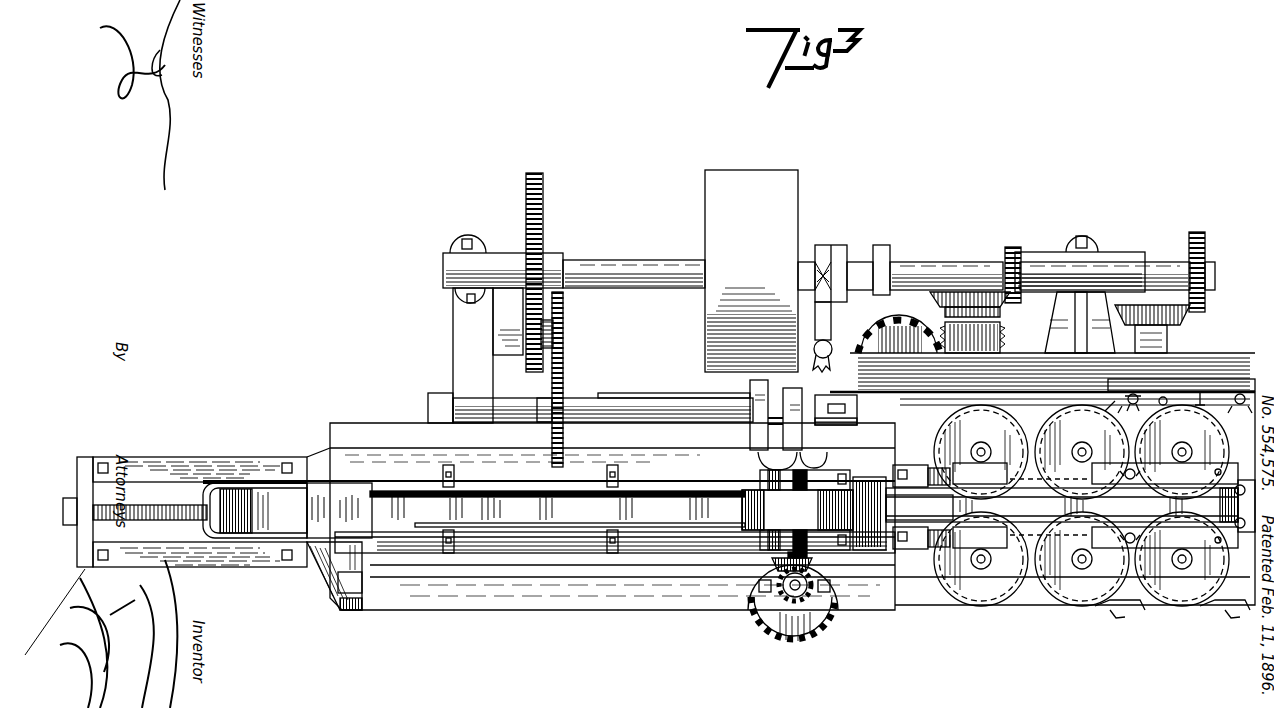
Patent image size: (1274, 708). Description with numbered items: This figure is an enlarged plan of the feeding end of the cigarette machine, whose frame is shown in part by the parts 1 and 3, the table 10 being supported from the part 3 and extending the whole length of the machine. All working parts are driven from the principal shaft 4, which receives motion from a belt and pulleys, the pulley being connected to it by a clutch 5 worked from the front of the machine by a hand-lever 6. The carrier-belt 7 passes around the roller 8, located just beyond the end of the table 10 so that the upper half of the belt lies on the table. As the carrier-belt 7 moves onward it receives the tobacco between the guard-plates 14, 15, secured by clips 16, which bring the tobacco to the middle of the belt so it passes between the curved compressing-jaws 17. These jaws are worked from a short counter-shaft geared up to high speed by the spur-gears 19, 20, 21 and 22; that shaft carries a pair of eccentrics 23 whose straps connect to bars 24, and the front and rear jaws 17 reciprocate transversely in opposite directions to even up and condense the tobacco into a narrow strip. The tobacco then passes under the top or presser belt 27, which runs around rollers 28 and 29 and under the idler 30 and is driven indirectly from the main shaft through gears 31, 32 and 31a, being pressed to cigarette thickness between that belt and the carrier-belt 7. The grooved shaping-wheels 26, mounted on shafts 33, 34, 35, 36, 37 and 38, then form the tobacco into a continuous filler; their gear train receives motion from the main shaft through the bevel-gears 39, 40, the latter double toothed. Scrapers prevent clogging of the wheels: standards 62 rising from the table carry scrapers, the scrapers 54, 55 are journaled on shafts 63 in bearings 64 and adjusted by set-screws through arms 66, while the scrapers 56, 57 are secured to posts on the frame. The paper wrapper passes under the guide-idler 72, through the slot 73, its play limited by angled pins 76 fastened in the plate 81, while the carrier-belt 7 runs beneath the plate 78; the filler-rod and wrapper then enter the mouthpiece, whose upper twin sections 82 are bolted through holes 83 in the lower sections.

The frame 1 is at (189, 551).
The frame 3 is at (729, 494).
The principal shaft 4 is at (889, 262).
The clutch 5 is at (797, 271).
The hand-lever 6 is at (829, 366).
The carrier-belt 7 is at (287, 510).
The roller 8 is at (257, 483).
The table 10 is at (345, 543).
The guard-plate 14 is at (557, 503).
The guard-plate 15 is at (580, 517).
The clips 16 is at (615, 550).
The compressing-jaws 17 is at (850, 460).
The spur-gear 19 is at (549, 272).
The spur-gear 20 is at (540, 368).
The spur-gear 21 is at (565, 331).
The spur-gear 22 is at (566, 372).
The eccentrics 23 is at (760, 412).
The bars 24 is at (805, 444).
The shaping-wheels 26 is at (1081, 505).
The top or presser belt 27 is at (1070, 505).
The roller 28 is at (814, 514).
The roller 29 is at (1063, 448).
The idler 30 is at (888, 508).
The gear 31 is at (818, 562).
The gear 31a is at (800, 622).
The gear 32 is at (815, 600).
The shaft 33 is at (986, 452).
The shaft 34 is at (1086, 452).
The shaft 35 is at (1186, 452).
The shaft 36 is at (981, 563).
The shaft 37 is at (1080, 562).
The shaft 38 is at (1180, 562).
The bevel-gear 39 is at (1008, 265).
The bevel-gear 40 is at (932, 303).
The scraper 54 is at (1181, 376).
The scraper 55 is at (1242, 410).
The scraper 56 is at (1130, 610).
The scraper 57 is at (1232, 612).
The standards 62 is at (1138, 395).
The shafts 63 is at (1199, 387).
The bearings 64 is at (1162, 397).
The arms 66 is at (1124, 415).
The guide-idler 72 is at (1205, 240).
The slot 73 is at (1102, 294).
The pins 76 is at (456, 470).
The plate 78 is at (603, 415).
The plate 81 is at (1265, 470).
The upper twin sections 82 is at (1247, 525).
The holes 83 is at (1247, 490).